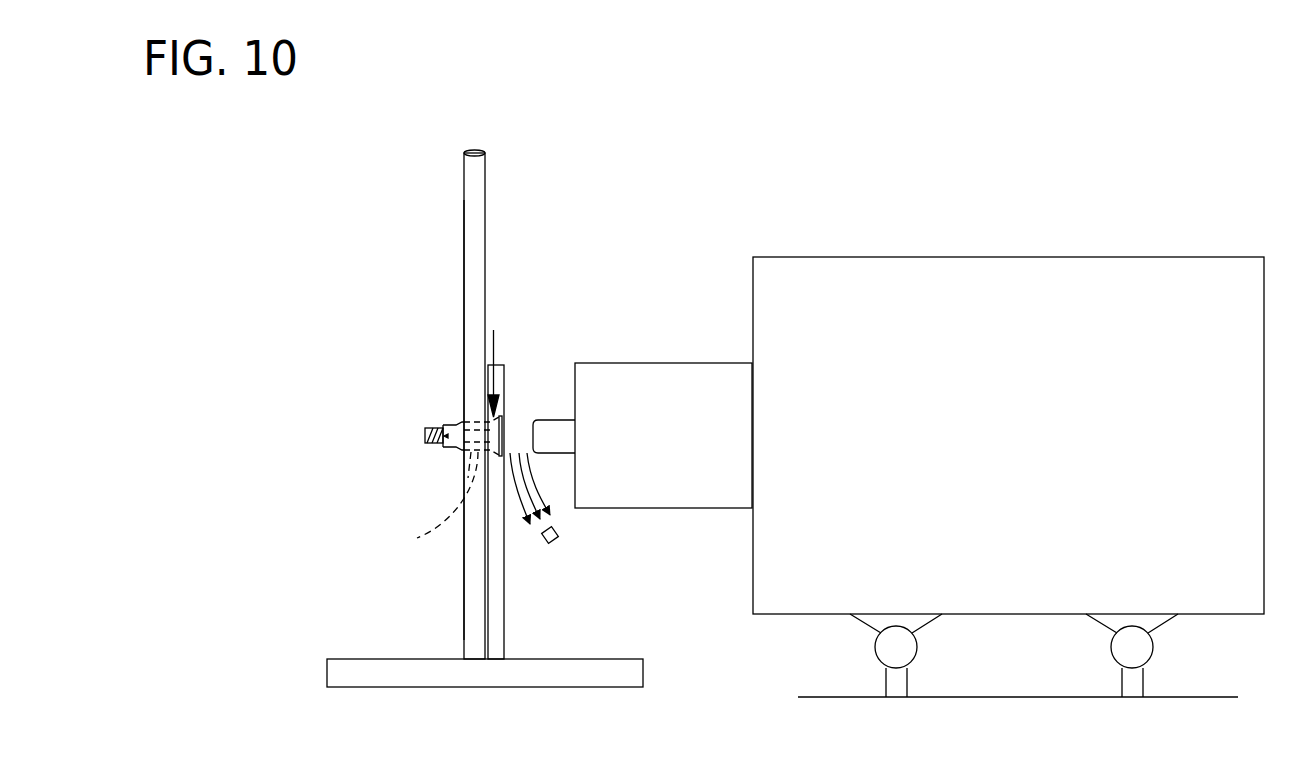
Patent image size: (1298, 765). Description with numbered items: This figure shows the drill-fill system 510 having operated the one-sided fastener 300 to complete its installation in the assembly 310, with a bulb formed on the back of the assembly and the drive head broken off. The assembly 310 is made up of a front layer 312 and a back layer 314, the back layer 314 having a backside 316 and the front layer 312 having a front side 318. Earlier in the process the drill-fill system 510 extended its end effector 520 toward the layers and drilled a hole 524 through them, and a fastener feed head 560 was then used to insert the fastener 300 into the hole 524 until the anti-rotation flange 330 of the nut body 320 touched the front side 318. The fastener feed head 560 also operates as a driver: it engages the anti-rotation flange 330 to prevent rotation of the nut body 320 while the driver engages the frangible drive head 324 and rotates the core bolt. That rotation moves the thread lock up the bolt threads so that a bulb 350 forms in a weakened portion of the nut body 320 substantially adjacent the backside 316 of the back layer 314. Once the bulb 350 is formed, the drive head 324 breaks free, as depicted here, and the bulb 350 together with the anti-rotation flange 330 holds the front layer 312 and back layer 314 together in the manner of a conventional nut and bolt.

The assembly 310 is at (533, 262).
The front layer 312 is at (493, 641).
The back layer 314 is at (486, 190).
The backside 316 is at (464, 193).
The front side 318 is at (505, 602).
The one-sided fastener 300 is at (494, 335).
The nut body 320 is at (451, 448).
The bulb 350 is at (463, 422).
The anti-rotation flange 330 is at (507, 418).
The hole 524 is at (424, 503).
The frangible drive head 324 is at (558, 540).
The fastener feed head 560 is at (540, 420).
The end effector 520 is at (696, 447).
The drill-fill system 510 is at (1035, 430).